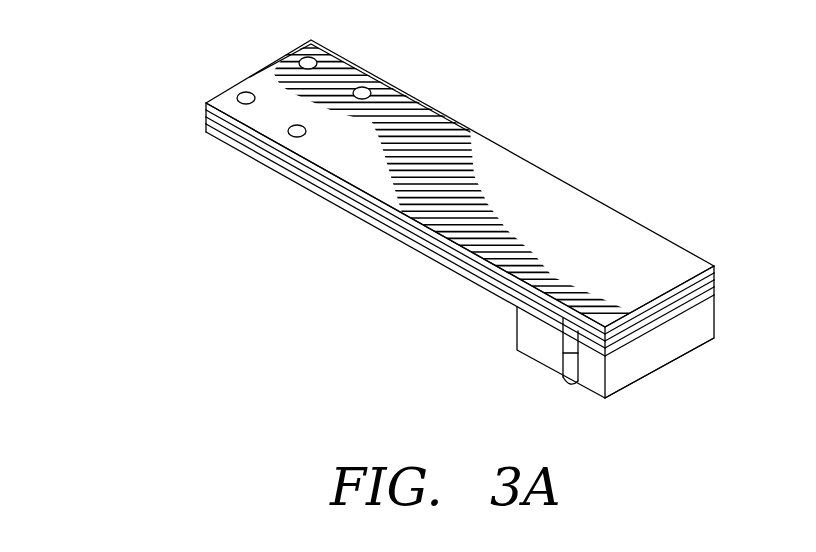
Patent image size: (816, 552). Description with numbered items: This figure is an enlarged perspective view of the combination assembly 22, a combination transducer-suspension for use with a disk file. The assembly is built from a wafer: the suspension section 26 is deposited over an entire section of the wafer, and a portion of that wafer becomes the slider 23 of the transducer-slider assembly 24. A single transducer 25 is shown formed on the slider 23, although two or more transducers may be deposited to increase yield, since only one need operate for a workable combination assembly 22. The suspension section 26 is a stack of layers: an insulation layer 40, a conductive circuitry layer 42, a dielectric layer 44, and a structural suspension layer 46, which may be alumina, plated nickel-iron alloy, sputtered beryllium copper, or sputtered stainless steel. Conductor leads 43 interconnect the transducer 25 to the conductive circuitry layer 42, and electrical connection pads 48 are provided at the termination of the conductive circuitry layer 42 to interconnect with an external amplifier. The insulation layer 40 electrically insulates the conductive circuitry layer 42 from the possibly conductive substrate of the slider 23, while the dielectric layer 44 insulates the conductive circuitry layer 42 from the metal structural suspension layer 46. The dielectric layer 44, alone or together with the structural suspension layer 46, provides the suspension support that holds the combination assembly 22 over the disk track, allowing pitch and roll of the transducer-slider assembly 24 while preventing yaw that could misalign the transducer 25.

The combination assembly 22 is at (553, 224).
The slider 23 is at (693, 340).
The transducer-slider assembly 24 is at (659, 367).
The transducer 25 is at (571, 379).
The suspension section 26 is at (444, 128).
The insulation layer 40 is at (222, 138).
The conductive circuitry layer 42 is at (206, 118).
The dielectric layer 44 is at (205, 107).
The structural suspension layer 46 is at (205, 104).
The conductor leads 43 is at (563, 348).
The electrical connection pads 48 is at (285, 54).